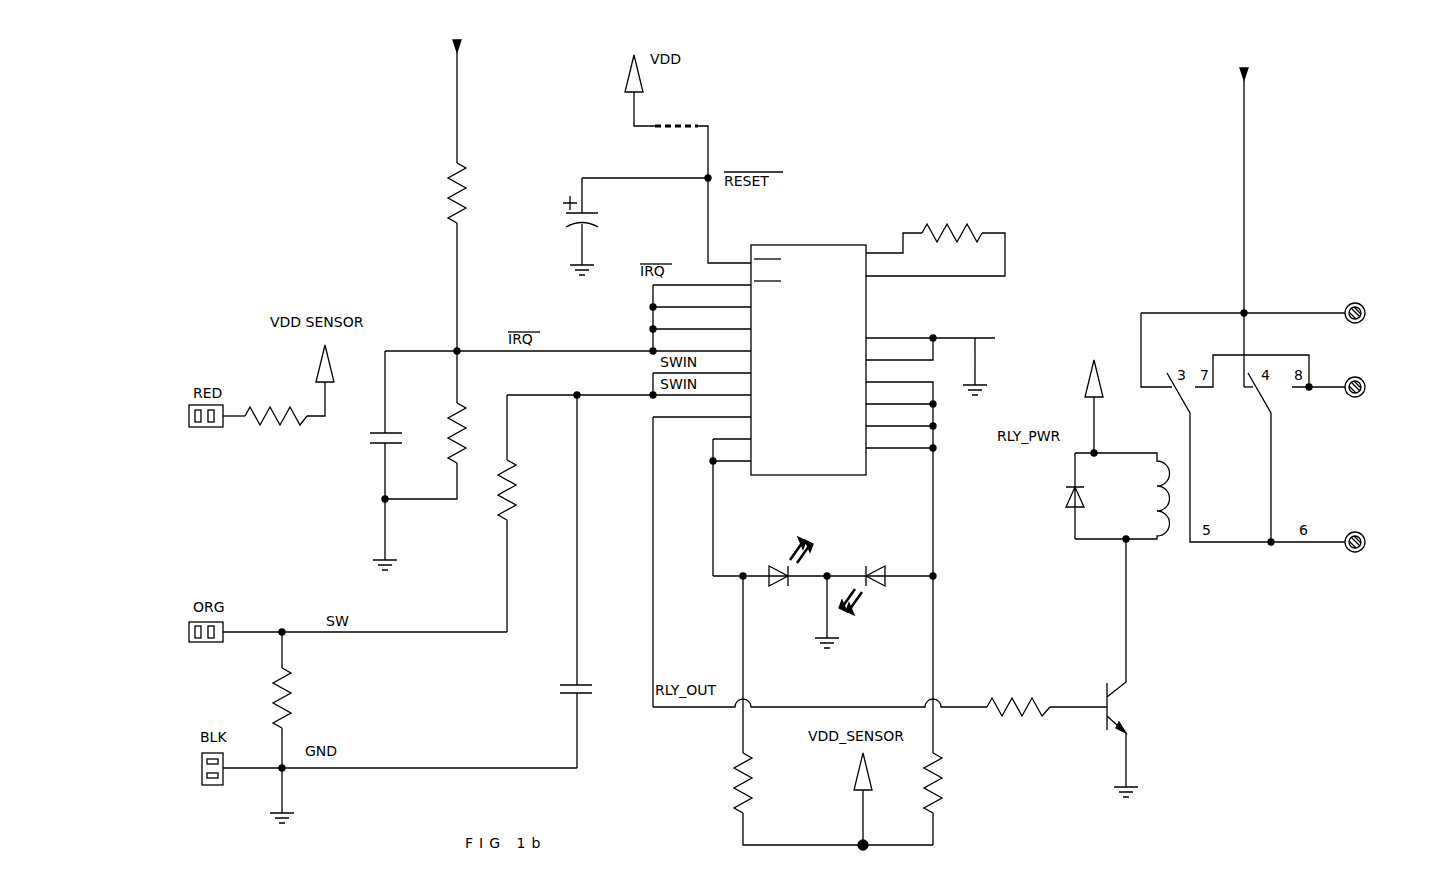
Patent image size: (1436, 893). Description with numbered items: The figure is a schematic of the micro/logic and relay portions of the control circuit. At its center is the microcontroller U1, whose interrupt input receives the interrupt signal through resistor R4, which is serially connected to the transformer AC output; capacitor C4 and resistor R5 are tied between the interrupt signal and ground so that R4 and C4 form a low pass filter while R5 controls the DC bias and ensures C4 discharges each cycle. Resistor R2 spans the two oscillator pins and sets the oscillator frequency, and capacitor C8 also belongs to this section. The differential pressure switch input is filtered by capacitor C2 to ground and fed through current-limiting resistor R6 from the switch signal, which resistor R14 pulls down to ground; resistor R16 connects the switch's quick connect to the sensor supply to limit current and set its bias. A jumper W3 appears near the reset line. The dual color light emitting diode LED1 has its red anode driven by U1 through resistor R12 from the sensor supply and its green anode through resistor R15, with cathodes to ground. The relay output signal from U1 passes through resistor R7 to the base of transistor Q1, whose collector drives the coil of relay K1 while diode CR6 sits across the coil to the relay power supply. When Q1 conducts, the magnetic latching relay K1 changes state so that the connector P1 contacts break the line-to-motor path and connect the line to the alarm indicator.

The resistor R4 is at (444, 195).
The resistor R5 is at (425, 425).
The resistor R6 is at (518, 513).
The resistor R7 is at (1047, 697).
The resistor R12 is at (833, 710).
The resistor R14 is at (296, 727).
The resistor R15 is at (949, 799).
The resistor R16 is at (274, 403).
The resistor R2 is at (935, 239).
The capacitor C2 is at (586, 581).
The capacitor C4 is at (378, 460).
The capacitor C8 is at (624, 226).
The microcontroller U1 is at (800, 351).
The jumper W3 is at (676, 115).
The light emitting diode LED1 is at (824, 592).
The diode CR6 is at (1055, 496).
The relay K1 is at (1122, 488).
The transistor Q1 is at (1119, 668).
The connector P1 is at (1353, 424).